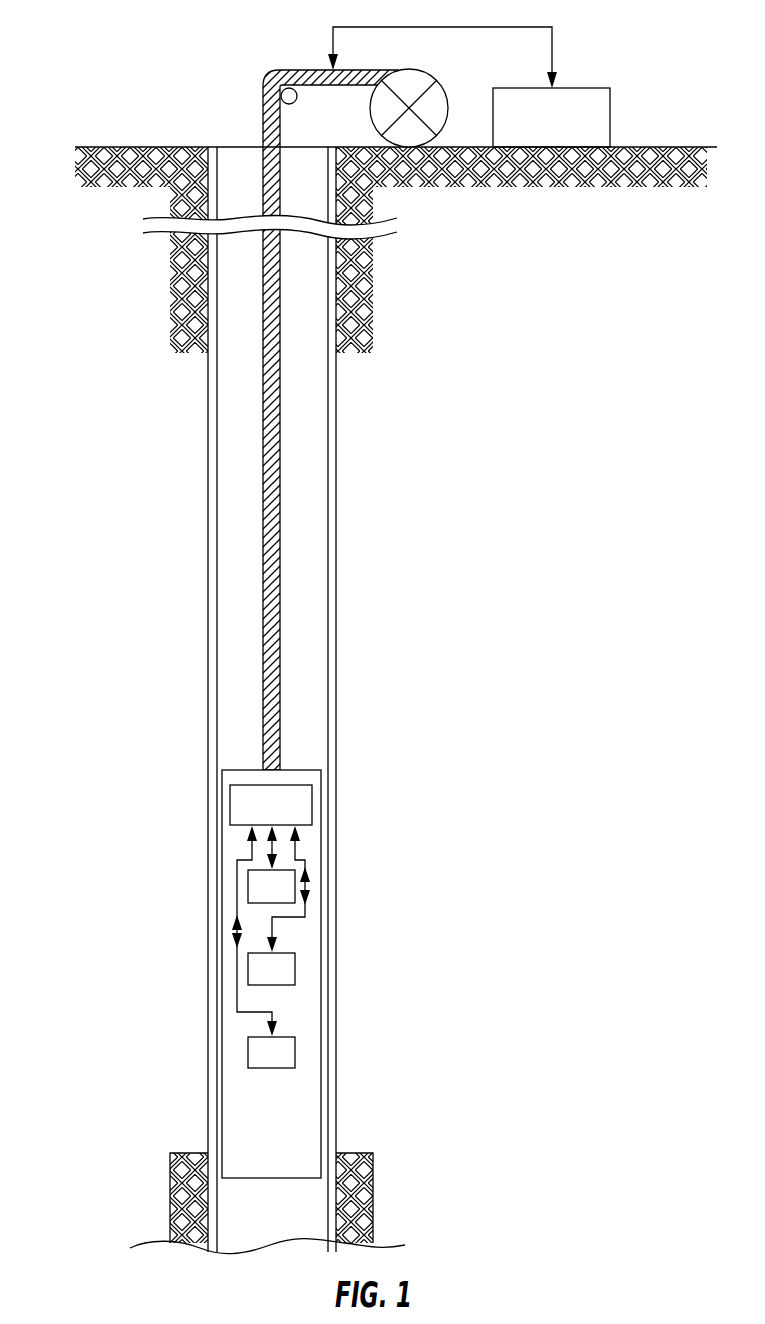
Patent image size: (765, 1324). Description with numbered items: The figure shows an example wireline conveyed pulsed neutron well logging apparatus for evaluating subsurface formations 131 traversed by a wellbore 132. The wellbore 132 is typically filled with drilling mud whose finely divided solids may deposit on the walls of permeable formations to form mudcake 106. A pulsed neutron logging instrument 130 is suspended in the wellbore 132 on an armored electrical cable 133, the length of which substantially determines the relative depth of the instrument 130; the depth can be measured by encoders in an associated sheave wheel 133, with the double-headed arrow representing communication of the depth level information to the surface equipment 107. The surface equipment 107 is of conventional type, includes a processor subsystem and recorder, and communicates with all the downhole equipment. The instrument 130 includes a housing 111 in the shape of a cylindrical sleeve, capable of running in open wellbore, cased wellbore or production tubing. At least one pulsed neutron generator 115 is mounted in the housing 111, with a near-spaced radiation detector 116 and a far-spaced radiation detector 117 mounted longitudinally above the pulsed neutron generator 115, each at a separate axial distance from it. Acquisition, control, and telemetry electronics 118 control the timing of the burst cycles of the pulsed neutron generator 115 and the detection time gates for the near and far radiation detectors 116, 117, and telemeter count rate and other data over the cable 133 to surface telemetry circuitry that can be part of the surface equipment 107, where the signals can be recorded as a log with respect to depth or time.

The mudcake 106 is at (208, 635).
The surface equipment 107 is at (595, 102).
The housing 111 is at (222, 1097).
The pulsed neutron generator 115 is at (288, 1052).
The near-spaced radiation detector 116 is at (288, 967).
The far-spaced radiation detector 117 is at (253, 883).
The acquisition, control, and telemetry electronics 118 is at (287, 810).
The pulsed neutron logging instrument 130 is at (242, 753).
The subsurface formations 131 is at (128, 147).
The wellbore 132 is at (235, 166).
The armored electrical cable 133 is at (276, 82).